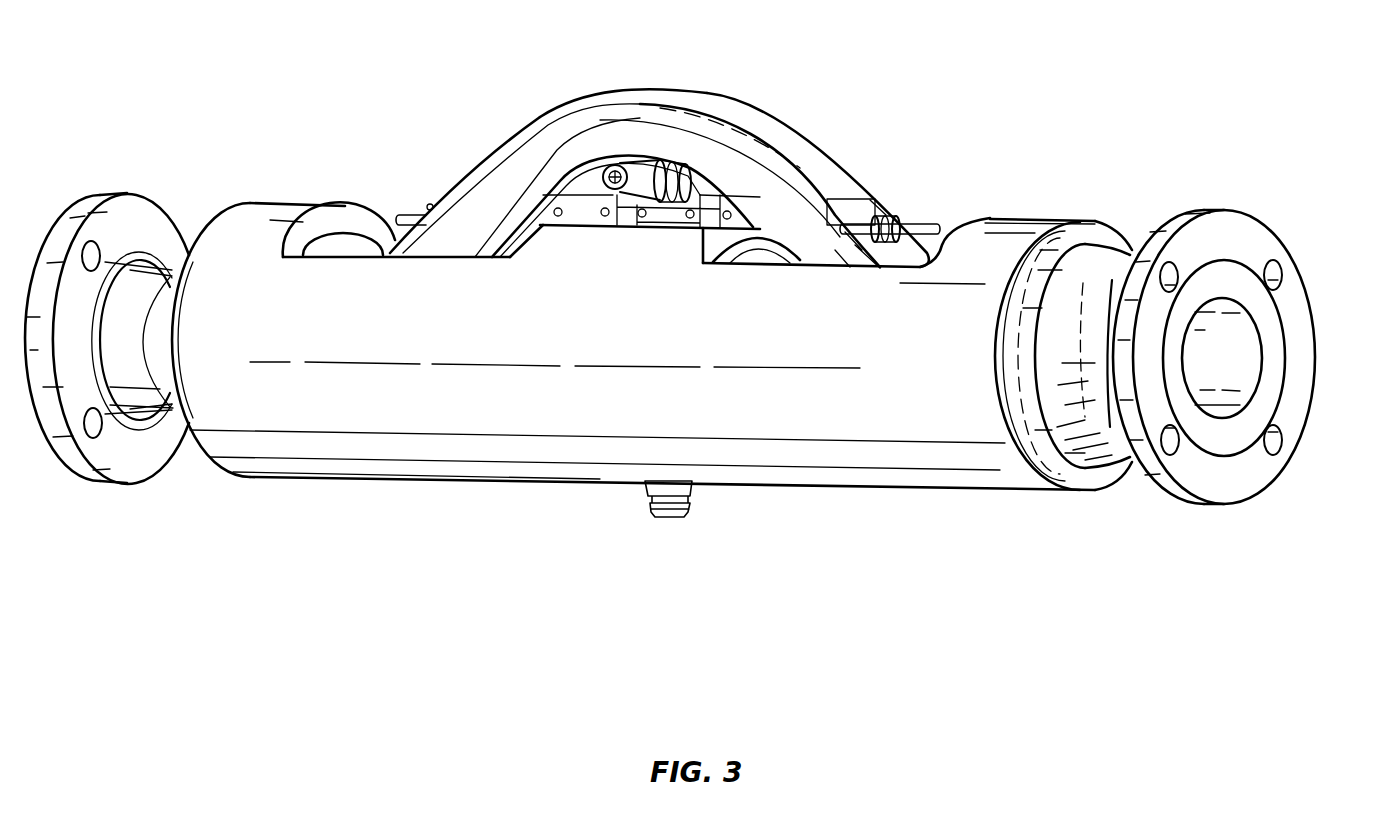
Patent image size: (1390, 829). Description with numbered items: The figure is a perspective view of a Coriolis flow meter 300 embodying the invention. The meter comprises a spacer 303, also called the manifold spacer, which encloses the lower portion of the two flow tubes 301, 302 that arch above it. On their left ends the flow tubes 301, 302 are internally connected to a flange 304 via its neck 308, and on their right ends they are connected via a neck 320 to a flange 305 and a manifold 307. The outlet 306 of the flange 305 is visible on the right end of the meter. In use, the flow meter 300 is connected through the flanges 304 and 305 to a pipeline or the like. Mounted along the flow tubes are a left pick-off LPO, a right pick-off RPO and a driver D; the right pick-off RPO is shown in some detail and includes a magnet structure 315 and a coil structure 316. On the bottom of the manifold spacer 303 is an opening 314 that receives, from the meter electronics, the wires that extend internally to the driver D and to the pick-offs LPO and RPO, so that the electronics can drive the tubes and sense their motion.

The Coriolis flow meter 300 is at (958, 90).
The flow tube 301 is at (577, 110).
The flow tube 302 is at (757, 97).
The spacer 303 is at (478, 452).
The flange 304 is at (130, 335).
The flange 305 is at (1243, 372).
The outlet 306 is at (1240, 370).
The manifold 307 is at (1095, 267).
The neck 308 is at (147, 267).
The opening 314 is at (672, 517).
The magnet structure 315 is at (860, 238).
The coil structure 316 is at (932, 218).
The neck 320 is at (1097, 363).
The left pick-off LPO is at (420, 213).
The right pick-off RPO is at (914, 226).
The driver D is at (640, 195).